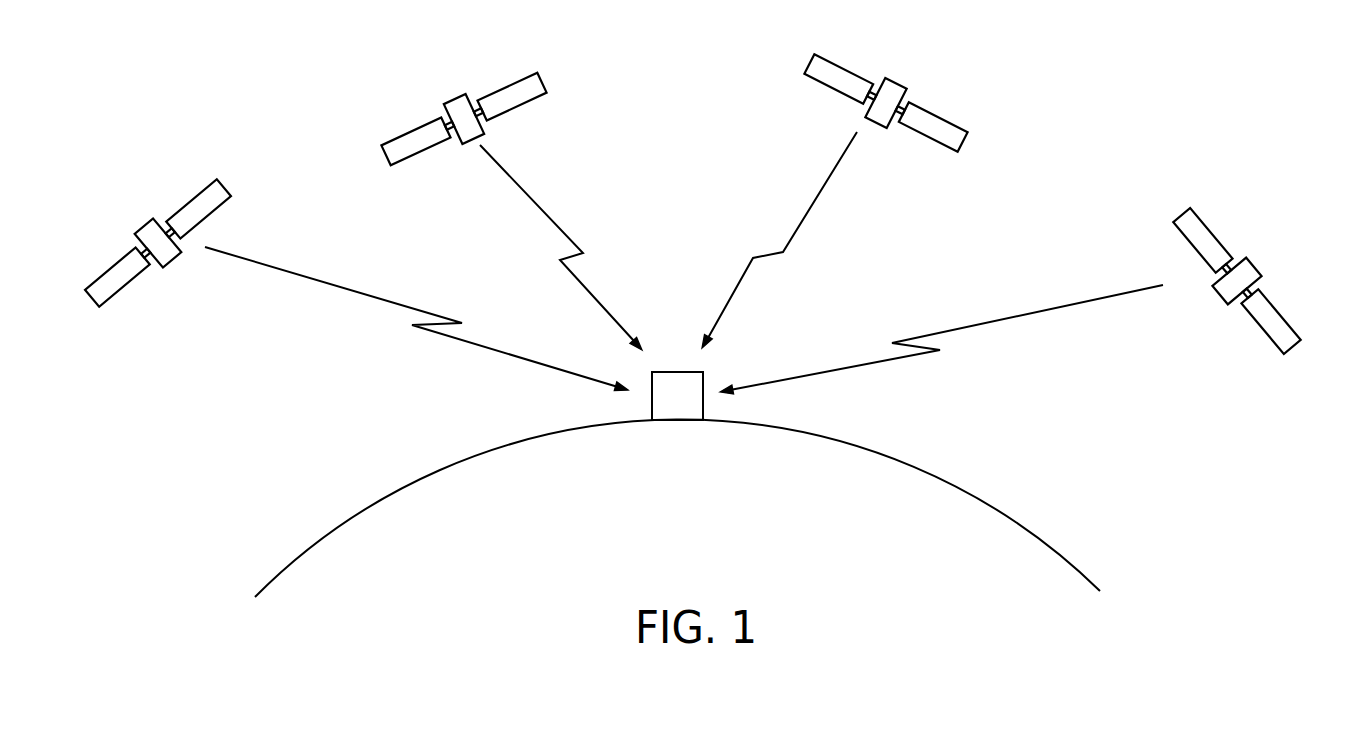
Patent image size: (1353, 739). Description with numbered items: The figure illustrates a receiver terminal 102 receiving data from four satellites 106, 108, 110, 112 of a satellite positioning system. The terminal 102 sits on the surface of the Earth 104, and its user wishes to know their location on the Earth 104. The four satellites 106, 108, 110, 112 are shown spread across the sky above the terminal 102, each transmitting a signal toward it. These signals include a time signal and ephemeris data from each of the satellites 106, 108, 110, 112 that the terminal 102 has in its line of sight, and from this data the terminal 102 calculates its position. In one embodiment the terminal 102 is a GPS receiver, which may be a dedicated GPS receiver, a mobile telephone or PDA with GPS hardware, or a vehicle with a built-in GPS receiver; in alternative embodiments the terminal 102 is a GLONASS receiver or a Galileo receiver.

The receiver terminal 102 is at (703, 372).
The Earth 104 is at (677, 508).
The satellite 106 is at (1257, 263).
The satellite 108 is at (897, 78).
The satellite 110 is at (452, 95).
The satellite 112 is at (145, 228).